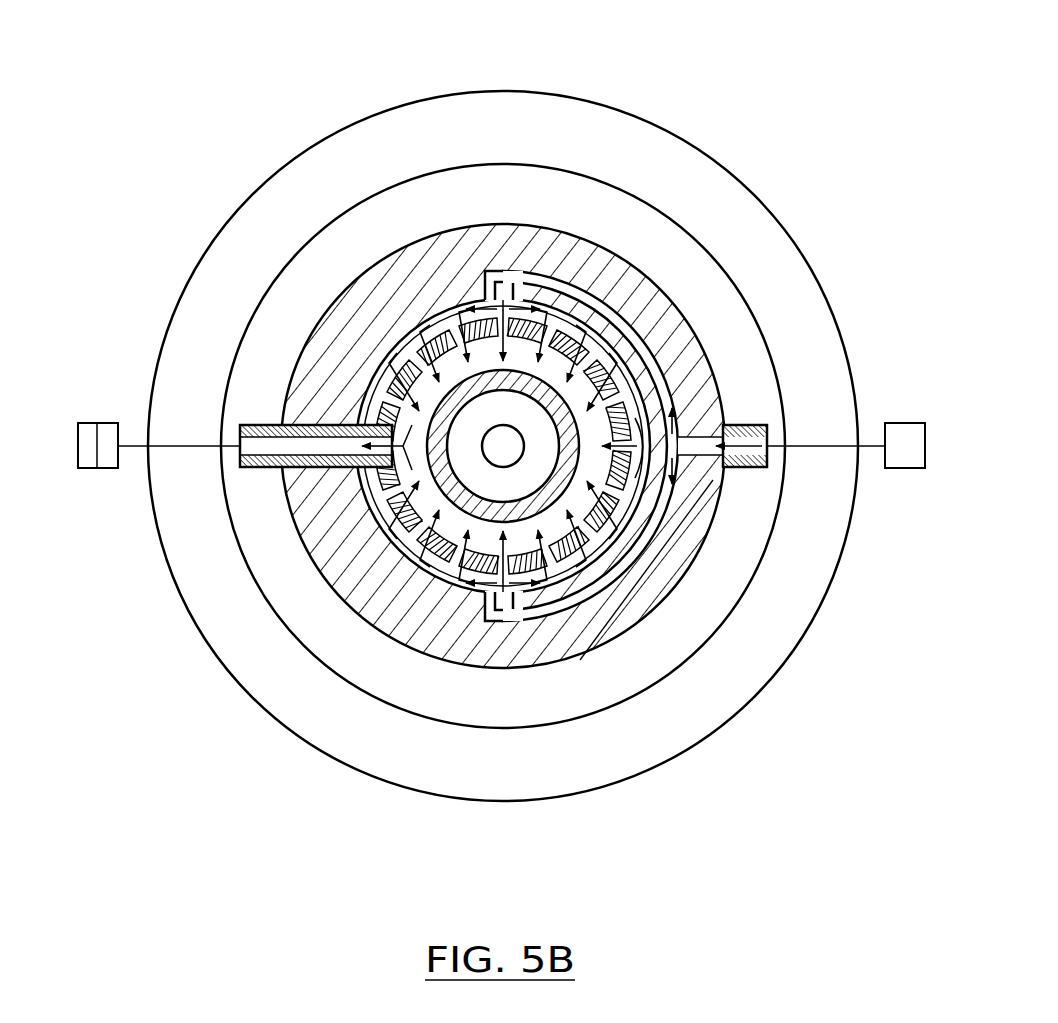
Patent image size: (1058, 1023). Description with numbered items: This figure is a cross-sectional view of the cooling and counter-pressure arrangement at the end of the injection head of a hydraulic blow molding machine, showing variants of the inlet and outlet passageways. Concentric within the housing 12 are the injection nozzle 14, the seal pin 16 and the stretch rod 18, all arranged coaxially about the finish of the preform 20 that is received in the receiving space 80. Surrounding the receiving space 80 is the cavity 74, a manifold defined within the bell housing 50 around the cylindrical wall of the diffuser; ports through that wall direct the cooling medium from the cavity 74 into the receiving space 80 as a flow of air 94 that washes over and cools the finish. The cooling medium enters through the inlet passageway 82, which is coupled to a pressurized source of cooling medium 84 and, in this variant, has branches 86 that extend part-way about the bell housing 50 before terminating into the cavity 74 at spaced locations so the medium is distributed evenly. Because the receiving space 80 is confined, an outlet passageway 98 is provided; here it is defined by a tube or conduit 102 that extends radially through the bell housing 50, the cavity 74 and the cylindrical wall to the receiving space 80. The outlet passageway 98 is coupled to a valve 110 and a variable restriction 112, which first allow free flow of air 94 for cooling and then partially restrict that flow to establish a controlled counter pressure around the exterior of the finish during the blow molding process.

The housing 12 is at (512, 128).
The injection nozzle 14 is at (577, 194).
The seal pin 16 is at (637, 266).
The stretch rod 18 is at (503, 455).
The preform 20 is at (385, 588).
The bell housing 50 is at (445, 295).
The cavity 74 is at (437, 317).
The receiving space 80 is at (525, 606).
The inlet passageway 82 is at (707, 462).
The pressurized source of cooling medium 84 is at (905, 423).
The branches 86 is at (640, 341).
The flow of air 94 is at (410, 329).
The outlet passageway 98 is at (277, 467).
The tube or conduit 102 is at (260, 467).
The valve 110 is at (105, 468).
The variable restriction 112 is at (95, 423).